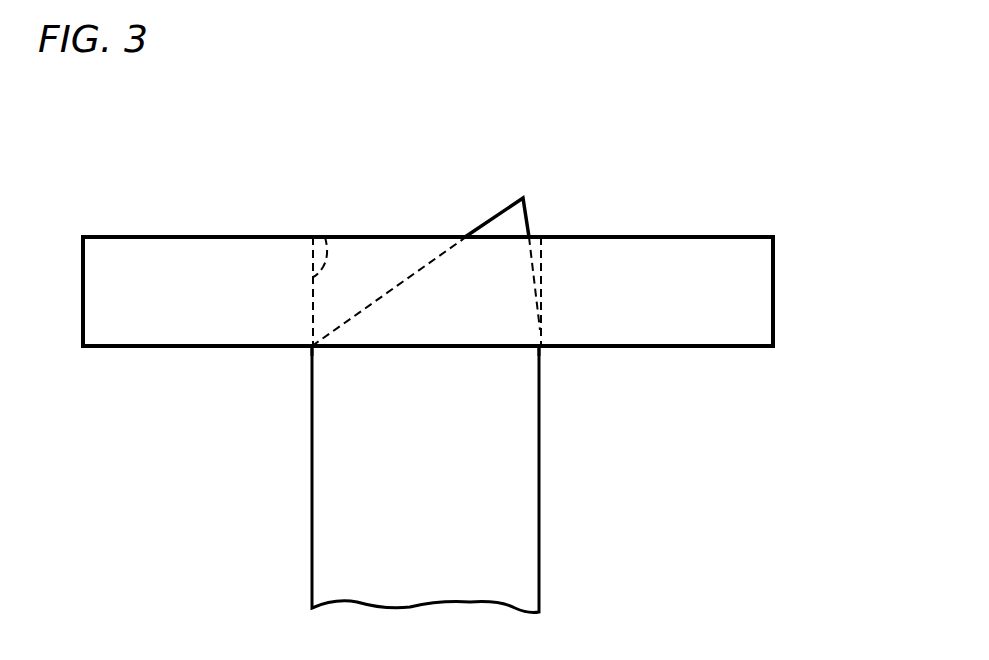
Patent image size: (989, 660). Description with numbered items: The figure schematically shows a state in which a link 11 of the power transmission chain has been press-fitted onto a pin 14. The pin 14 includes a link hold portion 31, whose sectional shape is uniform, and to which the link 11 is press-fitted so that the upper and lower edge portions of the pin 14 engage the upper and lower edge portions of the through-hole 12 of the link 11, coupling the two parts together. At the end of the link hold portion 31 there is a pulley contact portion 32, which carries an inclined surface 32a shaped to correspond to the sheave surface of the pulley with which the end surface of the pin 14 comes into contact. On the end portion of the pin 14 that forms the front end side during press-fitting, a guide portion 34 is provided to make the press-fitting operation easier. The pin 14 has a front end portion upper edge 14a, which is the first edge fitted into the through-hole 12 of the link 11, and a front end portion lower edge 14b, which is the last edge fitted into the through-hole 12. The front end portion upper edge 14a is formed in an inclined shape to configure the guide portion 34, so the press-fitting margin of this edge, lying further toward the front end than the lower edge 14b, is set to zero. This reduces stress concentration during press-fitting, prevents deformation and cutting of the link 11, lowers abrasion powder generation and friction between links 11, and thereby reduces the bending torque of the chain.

The link 11 is at (753, 298).
The through-hole 12 is at (325, 232).
The pin 14 is at (258, 418).
The front end portion upper edge 14a is at (535, 280).
The front end portion lower edge 14b is at (307, 348).
The link hold portion 31 is at (512, 545).
The pulley contact portion 32 is at (435, 290).
The inclined surface 32a is at (500, 218).
The guide portion 34 is at (515, 220).